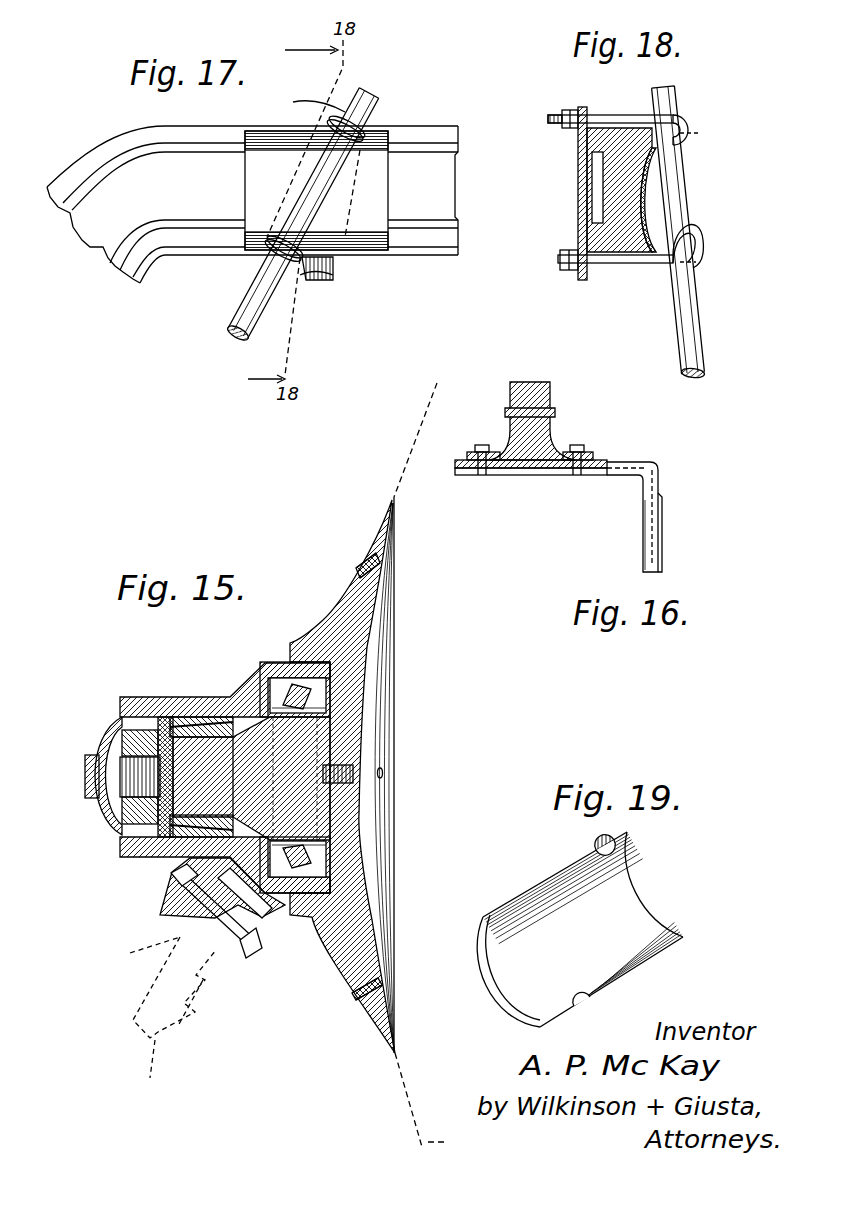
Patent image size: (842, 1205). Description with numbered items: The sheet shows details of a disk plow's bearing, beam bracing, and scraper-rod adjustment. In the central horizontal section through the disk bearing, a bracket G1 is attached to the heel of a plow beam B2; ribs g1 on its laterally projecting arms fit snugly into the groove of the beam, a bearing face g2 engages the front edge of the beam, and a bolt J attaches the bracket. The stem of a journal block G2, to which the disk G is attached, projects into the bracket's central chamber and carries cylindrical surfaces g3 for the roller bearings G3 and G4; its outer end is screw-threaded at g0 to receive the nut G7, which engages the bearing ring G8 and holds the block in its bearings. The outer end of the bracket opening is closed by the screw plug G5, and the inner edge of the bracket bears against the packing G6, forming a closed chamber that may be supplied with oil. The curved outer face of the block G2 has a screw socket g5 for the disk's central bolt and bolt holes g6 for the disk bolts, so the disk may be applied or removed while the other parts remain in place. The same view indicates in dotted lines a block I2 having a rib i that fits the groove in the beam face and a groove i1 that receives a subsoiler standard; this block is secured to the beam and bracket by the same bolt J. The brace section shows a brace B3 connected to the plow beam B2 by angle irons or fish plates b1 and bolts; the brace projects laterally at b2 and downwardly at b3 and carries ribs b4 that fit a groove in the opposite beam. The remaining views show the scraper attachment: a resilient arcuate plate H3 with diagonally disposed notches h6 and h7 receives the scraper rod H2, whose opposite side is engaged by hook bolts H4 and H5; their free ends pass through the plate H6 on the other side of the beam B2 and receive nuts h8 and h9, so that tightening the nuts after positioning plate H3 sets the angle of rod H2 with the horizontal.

In FIG. 15, the disk G is at (394, 466).
In FIG. 15, the bracket G1 is at (172, 863).
In FIG. 15, the journal block G2 is at (332, 747).
In FIG. 15, the roller bearing G3 is at (275, 690).
In FIG. 15, the roller bearing G4 is at (200, 717).
In FIG. 15, the screw plug G5 is at (85, 788).
In FIG. 15, the packing G6 is at (332, 863).
In FIG. 15, the nut G7 is at (120, 825).
In FIG. 15, the bearing ring G8 is at (165, 717).
In FIG. 15, the screw-threaded end g0 is at (113, 800).
In FIG. 15, the ribs g1 is at (208, 926).
In FIG. 15, the bearing face g2 is at (245, 905).
In FIG. 15, the cylindrical surfaces g3 is at (317, 833).
In FIG. 15, the screw socket g5 is at (353, 785).
In FIG. 15, the bolt holes g6 is at (383, 772).
In FIG. 15, the rib i is at (174, 987).
In FIG. 15, the groove i1 is at (190, 1015).
In FIG. 15, the block I2 is at (150, 1078).
In FIG. 15, the bolt J is at (236, 950).
In FIG. 17, the plow beam B2 is at (100, 250).
In FIG. 18, the plow beam B2 is at (620, 264).
In FIG. 16, the plow beam B2 is at (535, 382).
In FIG. 15, the plow beam B2 is at (140, 959).
In FIG. 16, the brace B3 is at (555, 476).
In FIG. 16, the angle irons or fish plates b1 is at (505, 418).
In FIG. 16, the lateral projection b2 is at (640, 460).
In FIG. 16, the downward projection b3 is at (643, 542).
In FIG. 16, the ribs b4 is at (664, 516).
In FIG. 17, the scraper rod H2 is at (228, 332).
In FIG. 18, the scraper rod H2 is at (701, 369).
In FIG. 17, the arcuate plate H3 is at (387, 250).
In FIG. 18, the arcuate plate H3 is at (647, 206).
In FIG. 19, the arcuate plate H3 is at (537, 888).
In FIG. 17, the hook bolt H4 is at (380, 130).
In FIG. 18, the hook bolt H4 is at (687, 125).
In FIG. 17, the hook bolt H5 is at (313, 280).
In FIG. 18, the hook bolt H5 is at (657, 265).
In FIG. 17, the plate H6 is at (320, 278).
In FIG. 18, the plate H6 is at (578, 208).
In FIG. 18, the notch h6 is at (700, 135).
In FIG. 19, the notch h6 is at (605, 862).
In FIG. 18, the notch h7 is at (698, 268).
In FIG. 19, the notch h7 is at (578, 996).
In FIG. 18, the nut h8 is at (561, 126).
In FIG. 18, the nut h9 is at (560, 260).